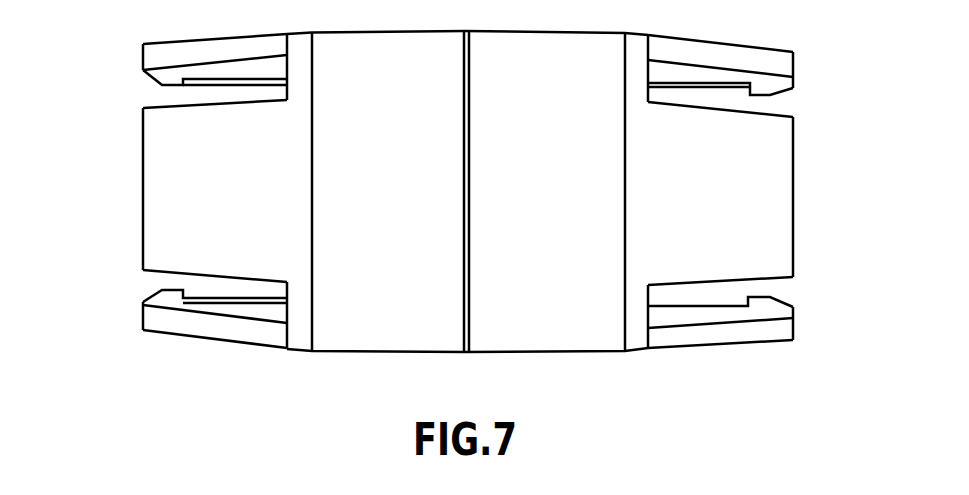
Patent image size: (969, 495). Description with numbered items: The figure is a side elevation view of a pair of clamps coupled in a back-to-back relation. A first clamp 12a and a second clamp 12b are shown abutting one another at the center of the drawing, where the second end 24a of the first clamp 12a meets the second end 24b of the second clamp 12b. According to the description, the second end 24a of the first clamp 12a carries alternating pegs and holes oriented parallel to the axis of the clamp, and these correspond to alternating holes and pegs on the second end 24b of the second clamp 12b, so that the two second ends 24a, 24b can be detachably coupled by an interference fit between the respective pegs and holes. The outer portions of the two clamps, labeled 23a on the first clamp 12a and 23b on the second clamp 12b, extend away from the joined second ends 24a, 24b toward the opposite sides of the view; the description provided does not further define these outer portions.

The first clamp 12a is at (518, 347).
The second clamp 12b is at (400, 347).
The first end bracket 23a is at (798, 172).
The second end bracket 23b is at (139, 167).
The second end of the first clamp 24a is at (474, 238).
The second end of the second clamp 24b is at (460, 190).